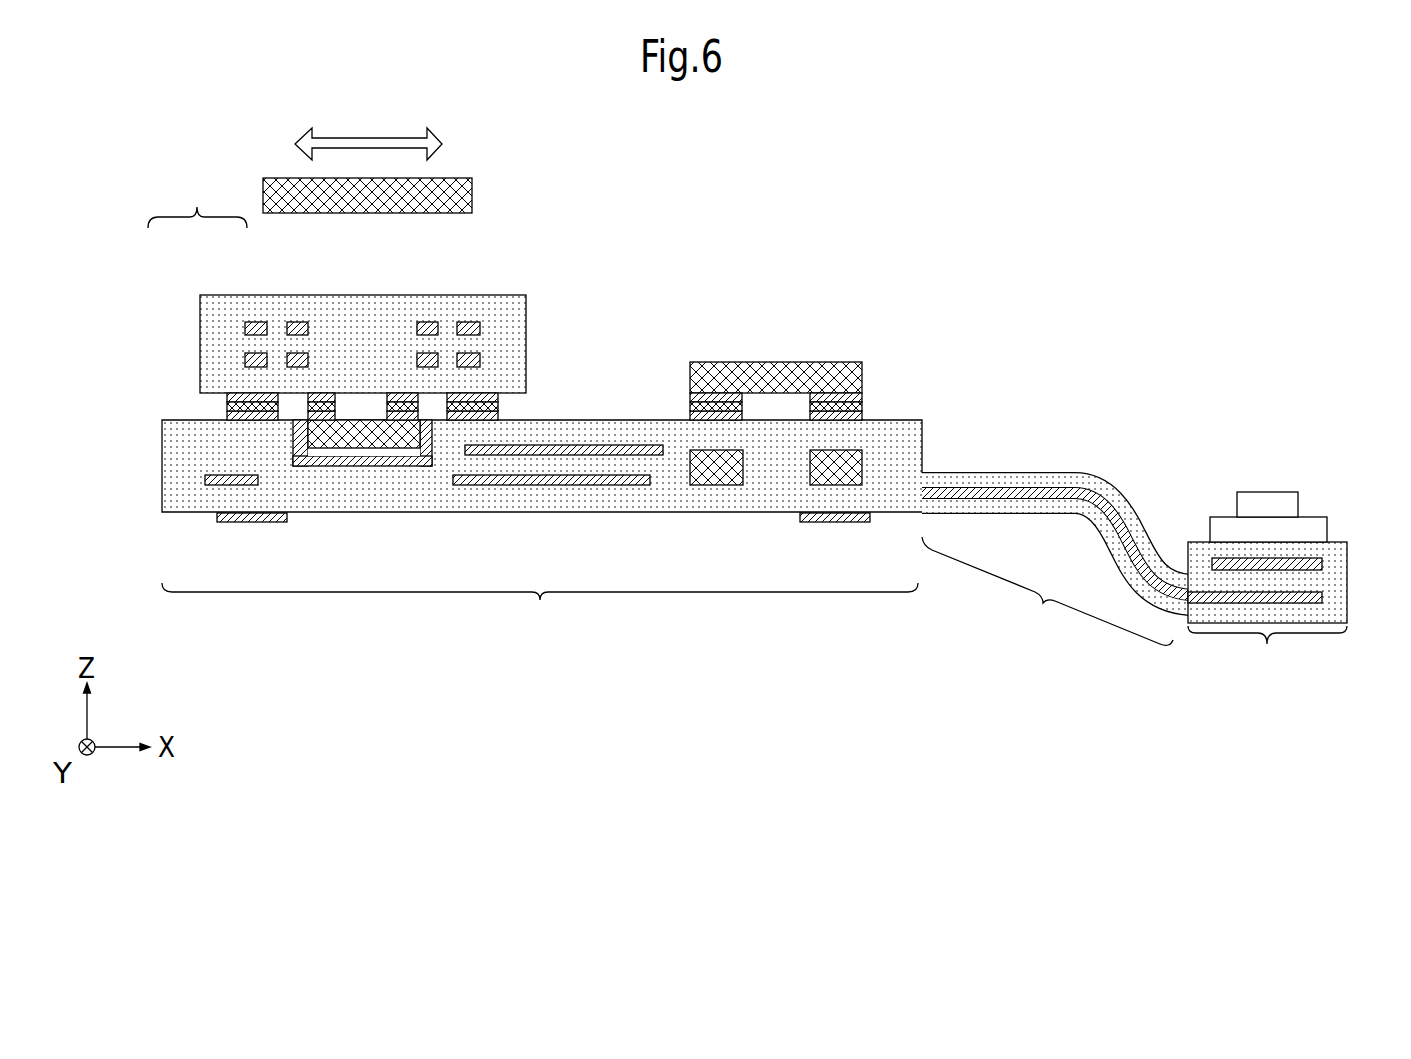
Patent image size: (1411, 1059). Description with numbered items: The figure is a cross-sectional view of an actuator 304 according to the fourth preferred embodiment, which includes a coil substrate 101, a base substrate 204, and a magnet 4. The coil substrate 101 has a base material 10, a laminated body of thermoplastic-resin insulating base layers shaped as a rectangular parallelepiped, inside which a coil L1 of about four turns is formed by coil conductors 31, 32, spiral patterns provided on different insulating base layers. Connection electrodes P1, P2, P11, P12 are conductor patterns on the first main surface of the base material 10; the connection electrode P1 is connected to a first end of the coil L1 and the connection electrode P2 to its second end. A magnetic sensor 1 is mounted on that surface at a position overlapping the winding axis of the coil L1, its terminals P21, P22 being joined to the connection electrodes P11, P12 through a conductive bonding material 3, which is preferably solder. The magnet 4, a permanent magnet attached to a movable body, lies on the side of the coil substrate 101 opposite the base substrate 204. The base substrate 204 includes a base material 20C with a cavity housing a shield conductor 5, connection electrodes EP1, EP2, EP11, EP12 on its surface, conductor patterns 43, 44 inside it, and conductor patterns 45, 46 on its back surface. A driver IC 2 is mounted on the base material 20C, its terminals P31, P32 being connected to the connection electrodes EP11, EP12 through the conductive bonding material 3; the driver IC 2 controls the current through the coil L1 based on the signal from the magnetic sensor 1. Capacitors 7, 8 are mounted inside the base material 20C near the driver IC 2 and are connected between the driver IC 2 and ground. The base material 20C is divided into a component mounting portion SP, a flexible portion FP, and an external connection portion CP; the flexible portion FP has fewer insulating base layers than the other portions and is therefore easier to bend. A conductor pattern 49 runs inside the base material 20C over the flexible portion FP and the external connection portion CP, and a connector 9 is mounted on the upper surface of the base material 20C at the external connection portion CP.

The actuator 304 is at (1256, 150).
The coil substrate 101 is at (505, 280).
The base substrate 204 is at (642, 528).
The base material 10 is at (526, 295).
The magnet 4 is at (473, 178).
The coil conductor 31 is at (247, 361).
The coil conductor 32 is at (245, 327).
The coil L1 is at (197, 200).
The connection electrode P11 is at (323, 395).
The connection electrode P12 is at (405, 395).
The connection electrode P1 is at (235, 393).
The connection electrode P2 is at (478, 392).
The conductive bonding material 3 is at (380, 395).
The connection electrode EP1 is at (224, 417).
The connection electrode EP2 is at (500, 414).
The connection electrode EP11 is at (690, 415).
The connection electrode EP12 is at (863, 415).
The driver IC 2 is at (810, 360).
The terminal P31 is at (708, 392).
The terminal P32 is at (838, 392).
The base material 20C is at (754, 514).
The conductor pattern 49 is at (1097, 493).
The connector 9 is at (1315, 532).
The conductor pattern 45 is at (250, 523).
The conductor pattern 46 is at (837, 522).
The terminal P21 is at (314, 458).
The terminal P22 is at (403, 462).
The shield conductor 5 is at (363, 466).
The magnetic sensor 1 is at (418, 440).
The conductor pattern 43 is at (598, 456).
The conductor pattern 44 is at (547, 486).
The capacitor 7 is at (718, 486).
The capacitor 8 is at (808, 467).
The component mounting portion SP is at (540, 611).
The flexible portion FP is at (1047, 592).
The external connection portion CP is at (1267, 660).